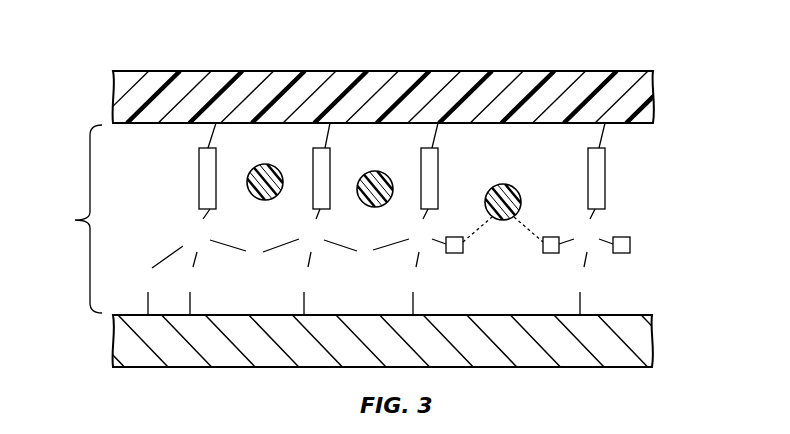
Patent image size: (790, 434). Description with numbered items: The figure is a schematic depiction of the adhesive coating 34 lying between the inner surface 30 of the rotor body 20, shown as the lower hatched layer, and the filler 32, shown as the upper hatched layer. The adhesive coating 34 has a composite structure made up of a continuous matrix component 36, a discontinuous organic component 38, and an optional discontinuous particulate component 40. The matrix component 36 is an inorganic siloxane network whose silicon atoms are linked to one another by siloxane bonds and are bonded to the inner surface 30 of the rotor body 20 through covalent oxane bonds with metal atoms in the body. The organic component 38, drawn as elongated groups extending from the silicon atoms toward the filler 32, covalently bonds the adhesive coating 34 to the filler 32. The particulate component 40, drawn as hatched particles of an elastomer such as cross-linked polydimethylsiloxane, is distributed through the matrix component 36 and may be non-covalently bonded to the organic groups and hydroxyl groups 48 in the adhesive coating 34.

The rotor body 20 is at (552, 367).
The inner surface 30 is at (638, 315).
The filler 32 is at (552, 71).
The adhesive coating 34 is at (375, 277).
The matrix component 36 is at (245, 288).
The organic component 38 is at (199, 170).
The particulate component 40 is at (513, 186).
The hydroxyl groups 48 is at (631, 247).